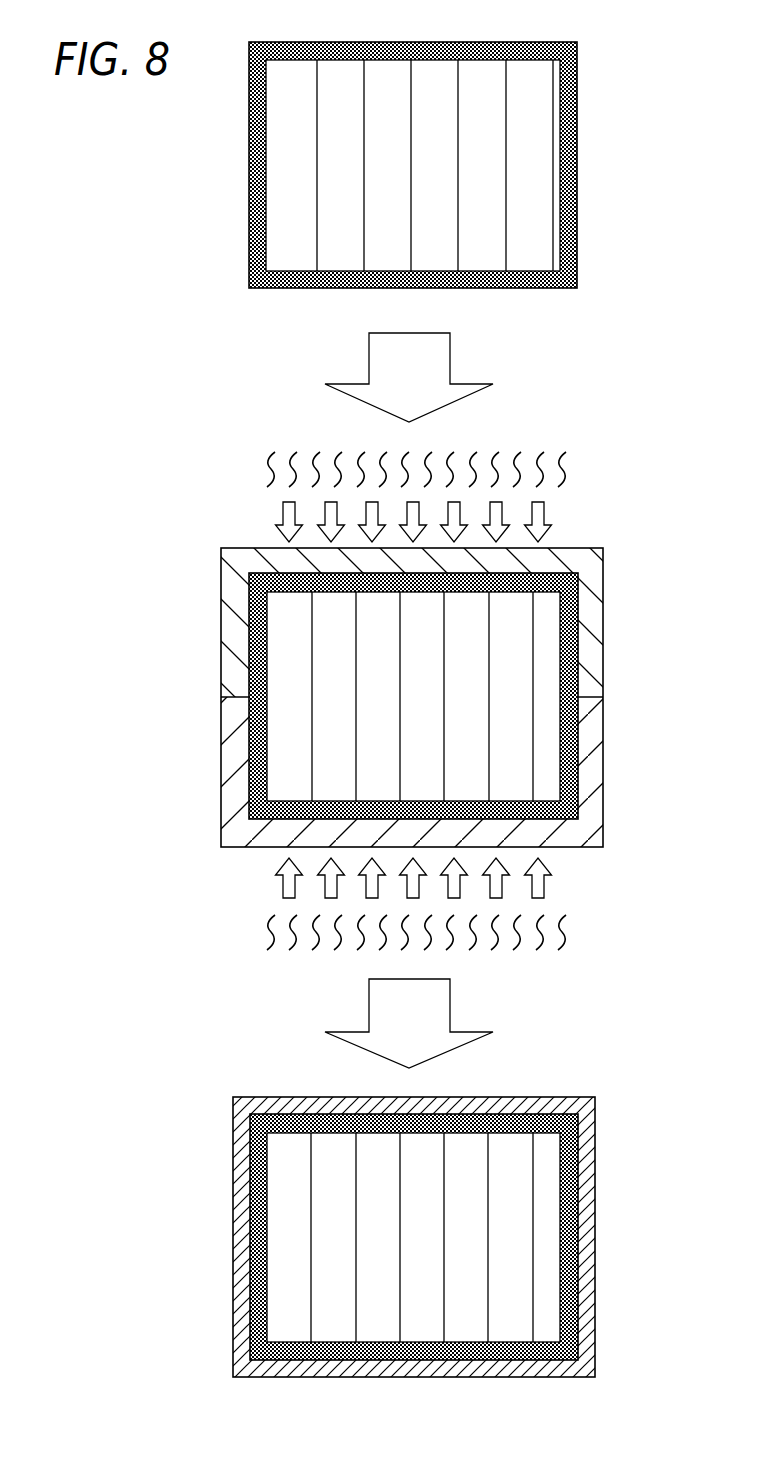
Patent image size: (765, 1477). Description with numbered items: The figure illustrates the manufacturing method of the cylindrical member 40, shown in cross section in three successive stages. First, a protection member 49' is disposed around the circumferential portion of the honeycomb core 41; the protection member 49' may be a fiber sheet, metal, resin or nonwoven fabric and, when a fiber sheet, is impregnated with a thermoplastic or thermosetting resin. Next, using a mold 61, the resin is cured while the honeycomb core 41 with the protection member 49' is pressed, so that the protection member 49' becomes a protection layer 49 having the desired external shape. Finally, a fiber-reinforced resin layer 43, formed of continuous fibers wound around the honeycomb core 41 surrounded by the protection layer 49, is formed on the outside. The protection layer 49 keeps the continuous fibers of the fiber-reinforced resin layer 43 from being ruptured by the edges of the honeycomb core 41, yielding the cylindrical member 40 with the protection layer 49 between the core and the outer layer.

The honeycomb core 41 is at (277, 203).
The protection member 49' is at (461, 165).
The protection layer 49 is at (462, 966).
The mold 61 is at (617, 575).
The cylindrical member 40 is at (462, 1207).
The fiber-reinforced resin layer 43 is at (597, 1187).